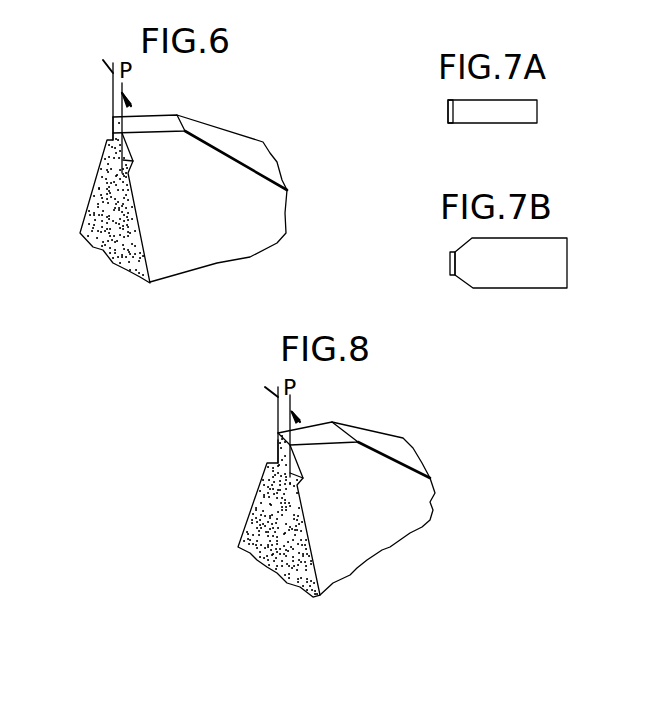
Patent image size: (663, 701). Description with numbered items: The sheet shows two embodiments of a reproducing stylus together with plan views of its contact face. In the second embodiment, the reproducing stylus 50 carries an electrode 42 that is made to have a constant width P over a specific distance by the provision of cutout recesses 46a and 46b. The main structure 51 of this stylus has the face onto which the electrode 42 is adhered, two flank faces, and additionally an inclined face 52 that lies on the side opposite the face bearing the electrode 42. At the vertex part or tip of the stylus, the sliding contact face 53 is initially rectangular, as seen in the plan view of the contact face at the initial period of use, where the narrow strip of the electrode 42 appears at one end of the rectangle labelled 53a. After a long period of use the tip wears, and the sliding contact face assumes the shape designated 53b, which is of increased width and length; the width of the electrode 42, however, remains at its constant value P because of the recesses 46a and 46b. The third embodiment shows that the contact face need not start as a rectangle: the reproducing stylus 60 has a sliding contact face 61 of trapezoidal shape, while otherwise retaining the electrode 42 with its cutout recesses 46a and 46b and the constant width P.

In FIG. 6, the electrode 42 is at (100, 202).
In FIG. 7A, the electrode 42 is at (448, 110).
In FIG. 7B, the electrode 42 is at (452, 254).
In FIG. 8, the electrode 42 is at (258, 507).
In FIG. 6, the cutout recess 46a is at (137, 163).
In FIG. 8, the cutout recess 46a is at (295, 465).
In FIG. 6, the cutout recess 46b is at (110, 137).
In FIG. 8, the cutout recess 46b is at (278, 454).
In FIG. 6, the reproducing stylus 50 is at (198, 93).
In FIG. 6, the main structure 51 is at (262, 214).
In FIG. 6, the inclined face 52 is at (232, 135).
In FIG. 6, the sliding contact face 53 is at (152, 127).
In FIG. 7A, the rectangular insert seat 53a is at (537, 105).
In FIG. 7B, the sliding contact face after wear 53b is at (562, 275).
In FIG. 8, the reproducing stylus 60 is at (398, 403).
In FIG. 8, the sliding contact face 61 is at (320, 427).